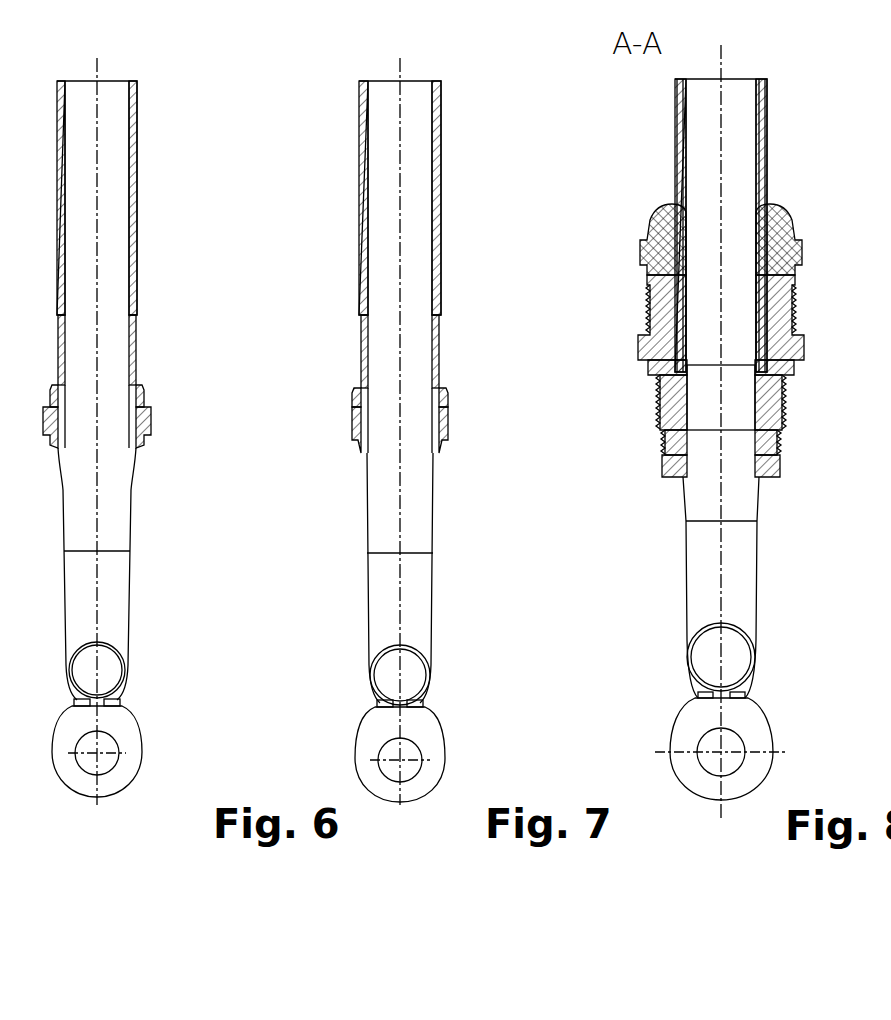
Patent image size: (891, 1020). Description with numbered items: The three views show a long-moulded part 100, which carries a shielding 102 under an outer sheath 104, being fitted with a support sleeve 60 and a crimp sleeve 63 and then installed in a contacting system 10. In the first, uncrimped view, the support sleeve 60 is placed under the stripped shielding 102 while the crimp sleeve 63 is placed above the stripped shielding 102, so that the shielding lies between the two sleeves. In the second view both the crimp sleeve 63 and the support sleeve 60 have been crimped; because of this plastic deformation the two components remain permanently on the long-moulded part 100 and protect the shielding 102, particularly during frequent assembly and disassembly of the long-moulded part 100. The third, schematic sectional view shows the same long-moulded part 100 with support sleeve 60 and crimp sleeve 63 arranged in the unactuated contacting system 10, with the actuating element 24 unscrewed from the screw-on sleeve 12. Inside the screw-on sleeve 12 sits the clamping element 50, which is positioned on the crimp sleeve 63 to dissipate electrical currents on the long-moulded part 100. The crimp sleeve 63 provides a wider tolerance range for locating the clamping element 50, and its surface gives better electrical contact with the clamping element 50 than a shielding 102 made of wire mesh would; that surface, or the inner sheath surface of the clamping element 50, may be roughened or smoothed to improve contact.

In FIG. 8, the contacting system 10 is at (613, 317).
In FIG. 8, the screw-on sleeve 12 is at (794, 315).
In FIG. 8, the actuating element 24 is at (662, 470).
In FIG. 8, the clamping element 50 is at (650, 369).
In FIG. 6, the support sleeve 60 is at (134, 437).
In FIG. 7, the support sleeve 60 is at (366, 440).
In FIG. 8, the support sleeve 60 is at (766, 415).
In FIG. 6, the crimp sleeve 63 is at (137, 354).
In FIG. 7, the crimp sleeve 63 is at (360, 343).
In FIG. 8, the crimp sleeve 63 is at (768, 395).
In FIG. 6, the long-moulded part 100 is at (137, 132).
In FIG. 7, the long-moulded part 100 is at (360, 121).
In FIG. 8, the long-moulded part 100 is at (768, 79).
In FIG. 6, the shielding 102 is at (134, 400).
In FIG. 7, the shielding 102 is at (363, 392).
In FIG. 8, the shielding 102 is at (766, 137).
In FIG. 8, the sheath 104 is at (766, 115).